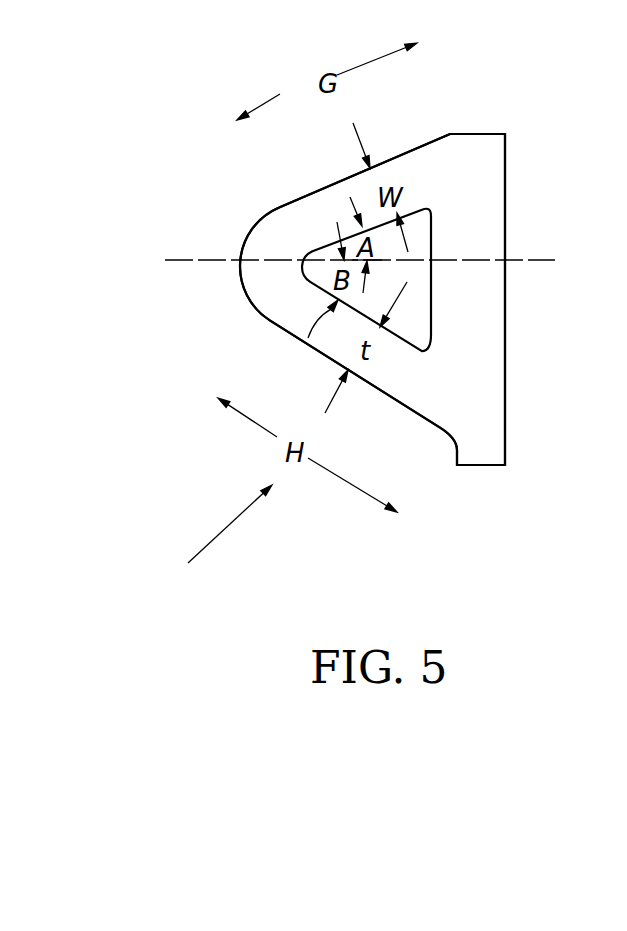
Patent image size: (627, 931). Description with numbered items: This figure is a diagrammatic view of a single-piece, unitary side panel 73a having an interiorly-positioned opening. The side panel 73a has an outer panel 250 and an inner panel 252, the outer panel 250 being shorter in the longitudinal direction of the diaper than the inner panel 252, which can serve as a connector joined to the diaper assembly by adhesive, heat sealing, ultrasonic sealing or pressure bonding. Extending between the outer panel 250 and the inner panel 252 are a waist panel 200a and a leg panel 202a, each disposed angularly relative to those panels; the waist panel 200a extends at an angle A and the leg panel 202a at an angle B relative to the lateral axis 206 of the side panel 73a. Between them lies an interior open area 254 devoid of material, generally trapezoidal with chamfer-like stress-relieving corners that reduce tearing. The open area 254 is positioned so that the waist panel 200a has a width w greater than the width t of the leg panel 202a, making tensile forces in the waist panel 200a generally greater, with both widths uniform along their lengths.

The outer panel 250 is at (272, 237).
The waist panel 200a is at (298, 217).
The lateral axis 206 is at (268, 253).
The leg panel 202a is at (310, 320).
The inner panel 252 is at (480, 293).
The interior open area 254 is at (417, 232).
The side panel 73a is at (209, 540).